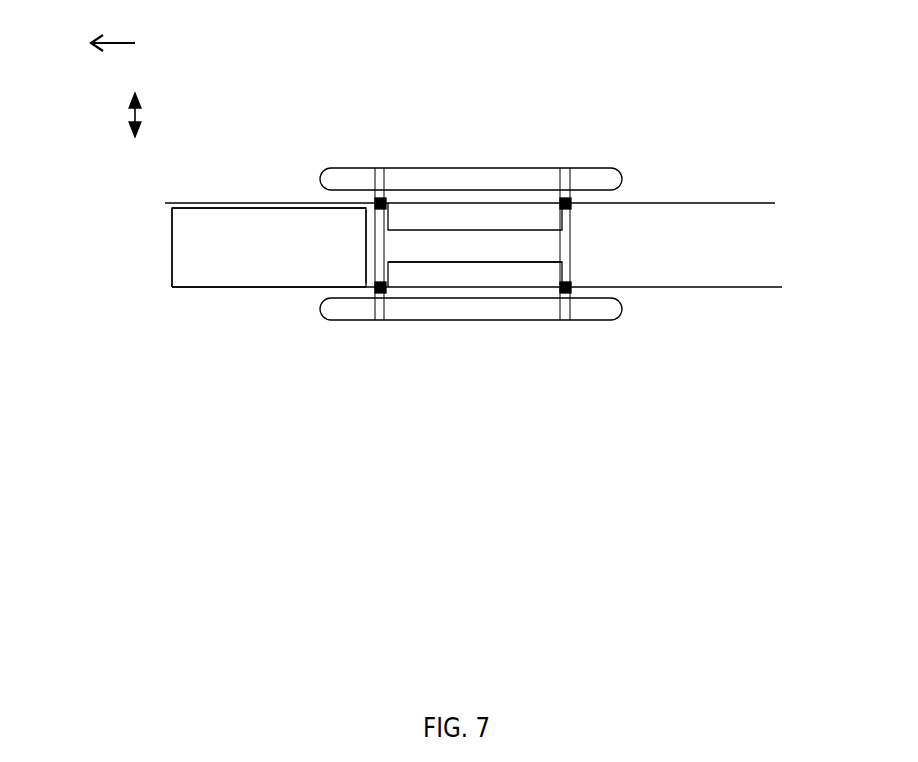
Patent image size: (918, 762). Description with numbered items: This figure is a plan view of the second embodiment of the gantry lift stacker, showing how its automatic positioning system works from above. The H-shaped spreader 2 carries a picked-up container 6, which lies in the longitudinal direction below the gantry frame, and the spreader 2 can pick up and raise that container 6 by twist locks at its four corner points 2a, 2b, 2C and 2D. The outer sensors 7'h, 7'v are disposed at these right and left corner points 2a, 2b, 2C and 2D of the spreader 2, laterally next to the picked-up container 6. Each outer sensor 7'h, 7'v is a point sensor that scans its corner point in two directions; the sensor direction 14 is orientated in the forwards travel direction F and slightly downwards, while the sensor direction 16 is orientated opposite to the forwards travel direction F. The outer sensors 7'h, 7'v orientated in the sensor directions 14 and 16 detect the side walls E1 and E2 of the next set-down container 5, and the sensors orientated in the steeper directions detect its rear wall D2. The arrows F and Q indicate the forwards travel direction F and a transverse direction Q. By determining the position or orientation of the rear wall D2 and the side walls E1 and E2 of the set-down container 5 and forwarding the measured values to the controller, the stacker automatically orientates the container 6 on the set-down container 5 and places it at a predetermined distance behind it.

The spreader 2 is at (423, 247).
The corner point 2a is at (383, 203).
The corner point 2b is at (383, 290).
The corner point 2C is at (568, 210).
The corner point 2D is at (568, 280).
The set-down container 5 is at (200, 262).
The container 6 is at (420, 268).
The outer sensor 7'v is at (318, 241).
The outer sensor 7'h is at (631, 242).
The sensor direction 14 is at (183, 202).
The sensor direction 16 is at (680, 200).
The side wall E1 is at (198, 289).
The side wall E2 is at (235, 207).
The rear wall D2 is at (365, 242).
The forwards travel direction F is at (122, 44).
The direction Q is at (149, 115).